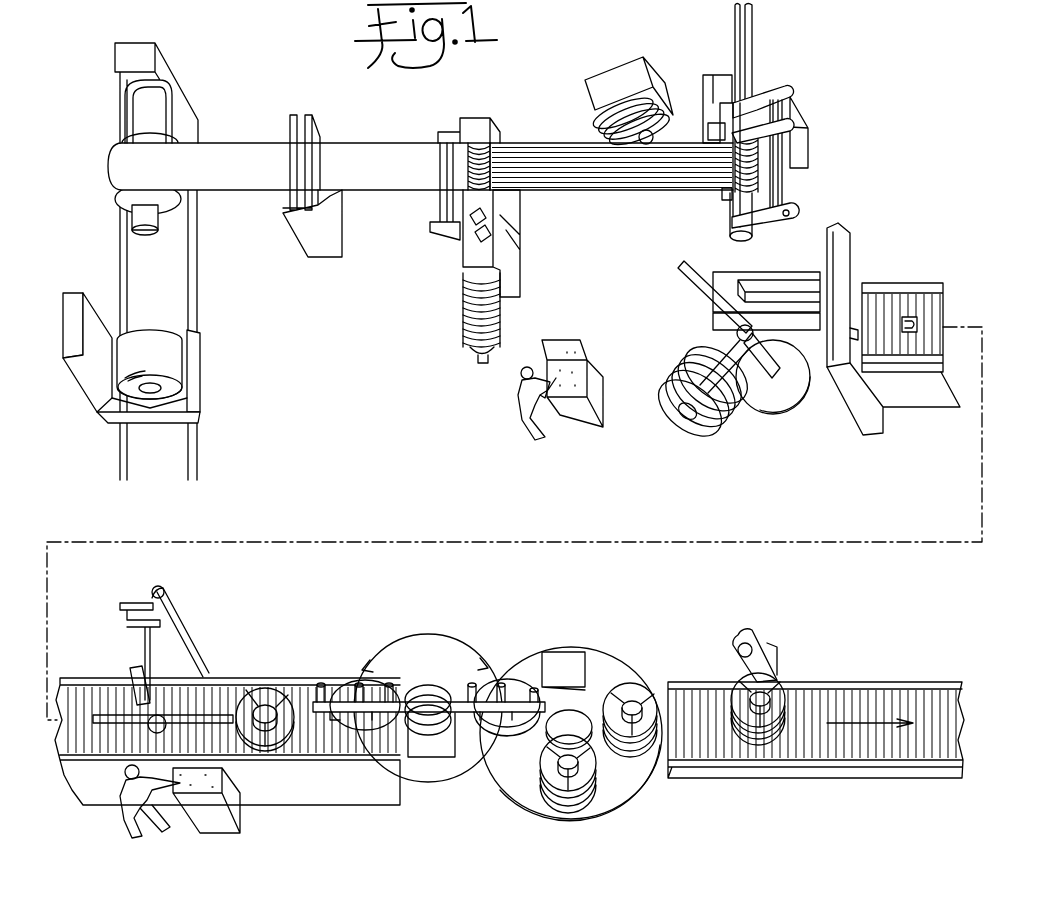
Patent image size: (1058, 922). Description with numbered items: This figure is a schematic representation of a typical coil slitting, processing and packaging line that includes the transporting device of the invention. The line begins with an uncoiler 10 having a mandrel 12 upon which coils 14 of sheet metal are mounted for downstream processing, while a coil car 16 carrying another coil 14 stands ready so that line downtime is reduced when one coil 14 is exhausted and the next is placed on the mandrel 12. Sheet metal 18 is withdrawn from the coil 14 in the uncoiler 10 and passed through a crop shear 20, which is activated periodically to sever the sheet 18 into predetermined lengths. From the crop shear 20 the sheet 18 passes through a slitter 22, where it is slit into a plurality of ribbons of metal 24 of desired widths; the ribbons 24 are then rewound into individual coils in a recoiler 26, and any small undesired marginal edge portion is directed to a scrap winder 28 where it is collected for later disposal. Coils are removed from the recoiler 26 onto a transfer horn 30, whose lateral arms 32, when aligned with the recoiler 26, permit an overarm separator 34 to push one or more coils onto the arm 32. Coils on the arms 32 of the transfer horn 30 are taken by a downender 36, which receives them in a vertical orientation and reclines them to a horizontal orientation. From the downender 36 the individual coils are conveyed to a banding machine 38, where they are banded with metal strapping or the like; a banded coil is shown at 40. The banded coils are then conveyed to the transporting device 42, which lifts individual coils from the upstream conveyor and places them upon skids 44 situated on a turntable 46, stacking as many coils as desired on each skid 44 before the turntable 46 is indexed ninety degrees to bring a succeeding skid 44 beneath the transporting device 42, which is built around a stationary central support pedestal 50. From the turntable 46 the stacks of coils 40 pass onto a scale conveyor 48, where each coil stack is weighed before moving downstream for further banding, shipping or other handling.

The uncoiler 10 is at (193, 52).
The mandrel 12 is at (140, 232).
The coil 14 is at (120, 169).
The coil car 16 is at (200, 370).
The sheet metal 18 is at (240, 147).
The crop shear 20 is at (337, 225).
The slitter 22 is at (508, 251).
The ribbons of metal 24 is at (672, 160).
The recoiler 26 is at (722, 75).
The scrap winder 28 is at (607, 77).
The transfer horn 30 is at (752, 273).
The lateral arm 32 is at (688, 282).
The overarm separator 34 is at (830, 130).
The downender 36 is at (922, 273).
The banding machine 38 is at (192, 686).
The banded coil 40 is at (263, 690).
The transporting device 42 is at (447, 685).
The skid 44 is at (581, 653).
The turntable 46 is at (622, 787).
The scale conveyor 48 is at (797, 684).
The central support pedestal 50 is at (427, 737).